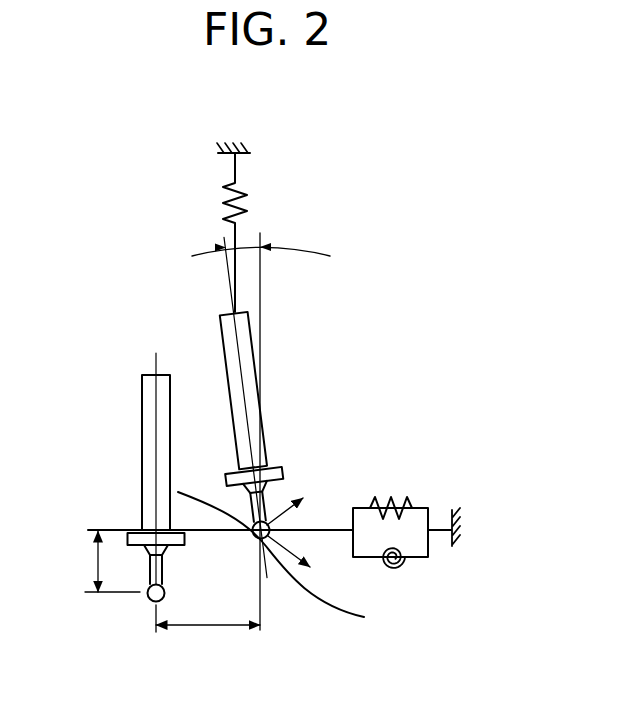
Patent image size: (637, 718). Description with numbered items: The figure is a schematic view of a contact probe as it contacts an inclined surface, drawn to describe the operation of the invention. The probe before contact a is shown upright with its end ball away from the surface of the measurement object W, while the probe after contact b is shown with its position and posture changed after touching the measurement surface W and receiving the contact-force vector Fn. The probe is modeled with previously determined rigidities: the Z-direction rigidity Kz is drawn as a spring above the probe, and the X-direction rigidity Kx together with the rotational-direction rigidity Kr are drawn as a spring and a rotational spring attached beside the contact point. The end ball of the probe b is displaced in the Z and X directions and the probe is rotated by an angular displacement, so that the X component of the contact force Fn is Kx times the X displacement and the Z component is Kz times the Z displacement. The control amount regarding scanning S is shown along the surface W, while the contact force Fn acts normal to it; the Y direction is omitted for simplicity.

The probe before contact a is at (146, 477).
The probe after contact b is at (241, 407).
The surface of a measurement object W is at (269, 542).
The Z-direction rigidity of the probe Kz is at (250, 227).
The X-direction rigidity of the probe Kx is at (406, 512).
The rotational-direction rigidity of the probe Kr is at (411, 571).
The contact-force vector Fn is at (308, 496).
The control amount regarding scanning S is at (313, 568).